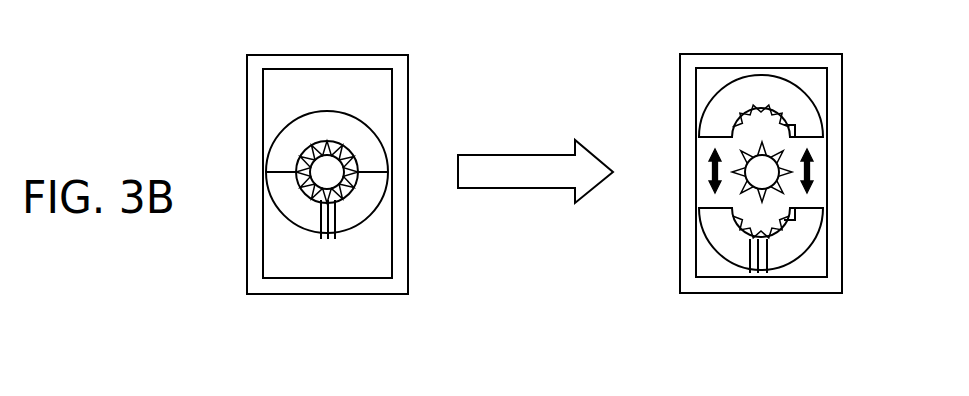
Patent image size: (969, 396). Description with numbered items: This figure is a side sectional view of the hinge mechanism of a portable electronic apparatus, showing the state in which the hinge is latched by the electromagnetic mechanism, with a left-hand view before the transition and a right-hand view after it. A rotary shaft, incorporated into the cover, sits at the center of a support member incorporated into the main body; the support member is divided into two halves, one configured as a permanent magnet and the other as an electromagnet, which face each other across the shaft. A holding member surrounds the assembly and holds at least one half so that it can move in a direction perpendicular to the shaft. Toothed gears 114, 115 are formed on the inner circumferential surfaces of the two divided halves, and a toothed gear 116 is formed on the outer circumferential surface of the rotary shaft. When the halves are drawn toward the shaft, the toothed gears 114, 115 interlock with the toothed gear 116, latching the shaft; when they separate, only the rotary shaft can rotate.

The toothed gear 114 is at (780, 130).
The toothed gear 115 is at (780, 210).
The toothed gear 116 is at (713, 168).